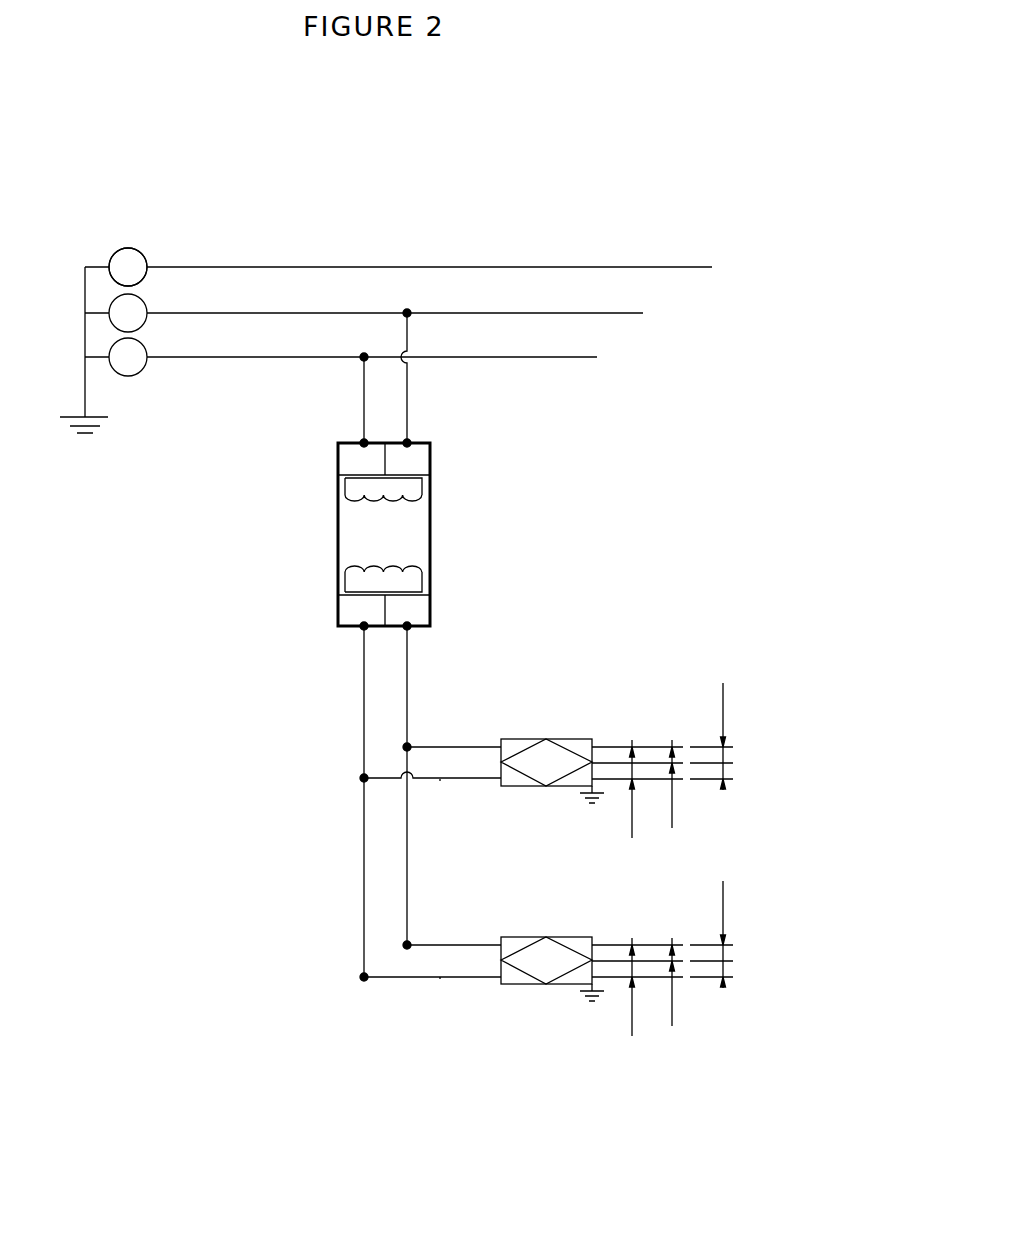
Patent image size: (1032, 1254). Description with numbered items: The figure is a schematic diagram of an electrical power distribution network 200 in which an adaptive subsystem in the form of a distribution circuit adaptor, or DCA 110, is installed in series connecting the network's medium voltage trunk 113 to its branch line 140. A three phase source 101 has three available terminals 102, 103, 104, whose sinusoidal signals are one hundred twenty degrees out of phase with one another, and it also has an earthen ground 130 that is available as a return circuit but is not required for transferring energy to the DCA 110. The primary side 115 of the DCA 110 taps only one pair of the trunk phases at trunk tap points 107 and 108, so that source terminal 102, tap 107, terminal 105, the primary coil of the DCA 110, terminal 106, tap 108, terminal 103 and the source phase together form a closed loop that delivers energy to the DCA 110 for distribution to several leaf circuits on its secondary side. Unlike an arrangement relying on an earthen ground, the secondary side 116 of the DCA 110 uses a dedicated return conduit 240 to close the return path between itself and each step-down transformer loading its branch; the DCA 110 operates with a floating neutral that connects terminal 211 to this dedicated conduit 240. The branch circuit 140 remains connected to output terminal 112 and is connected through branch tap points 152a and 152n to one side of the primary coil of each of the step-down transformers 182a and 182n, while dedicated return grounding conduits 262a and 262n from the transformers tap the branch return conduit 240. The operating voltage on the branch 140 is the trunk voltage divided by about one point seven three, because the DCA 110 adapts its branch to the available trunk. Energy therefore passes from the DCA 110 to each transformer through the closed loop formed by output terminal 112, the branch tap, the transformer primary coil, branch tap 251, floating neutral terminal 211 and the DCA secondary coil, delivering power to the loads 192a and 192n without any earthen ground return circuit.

The source 101 is at (67, 260).
The source terminal 102 is at (152, 352).
The source terminal 103 is at (152, 307).
The source terminal 104 is at (152, 258).
The terminal 105 is at (353, 432).
The terminal 106 is at (417, 432).
The trunk tap point 107 is at (373, 352).
The trunk tap point 108 is at (407, 305).
The distribution circuit adaptor (DCA) 110 is at (348, 548).
The output terminal 112 is at (403, 638).
The trunk 113 is at (640, 243).
The primary side 115 is at (432, 447).
The secondary side 116 is at (432, 608).
The earthen ground 130 is at (85, 453).
The branch line 140 is at (395, 717).
The branch tap point 152a is at (420, 735).
The branch tap point 152n is at (407, 967).
The step-down transformer (SDT) 182a is at (565, 730).
The step-down transformer (SDT) 182n is at (538, 935).
The loads 192a is at (772, 730).
The loads 192n is at (772, 928).
The electrical power distribution network 200 is at (722, 382).
The floating neutral terminal 211 is at (357, 637).
The dedicated return conduit 240 is at (355, 828).
The branch tap 251 is at (354, 783).
The dedicated return grounding conduit 262a is at (440, 785).
The dedicated return grounding conduit 262n is at (440, 987).